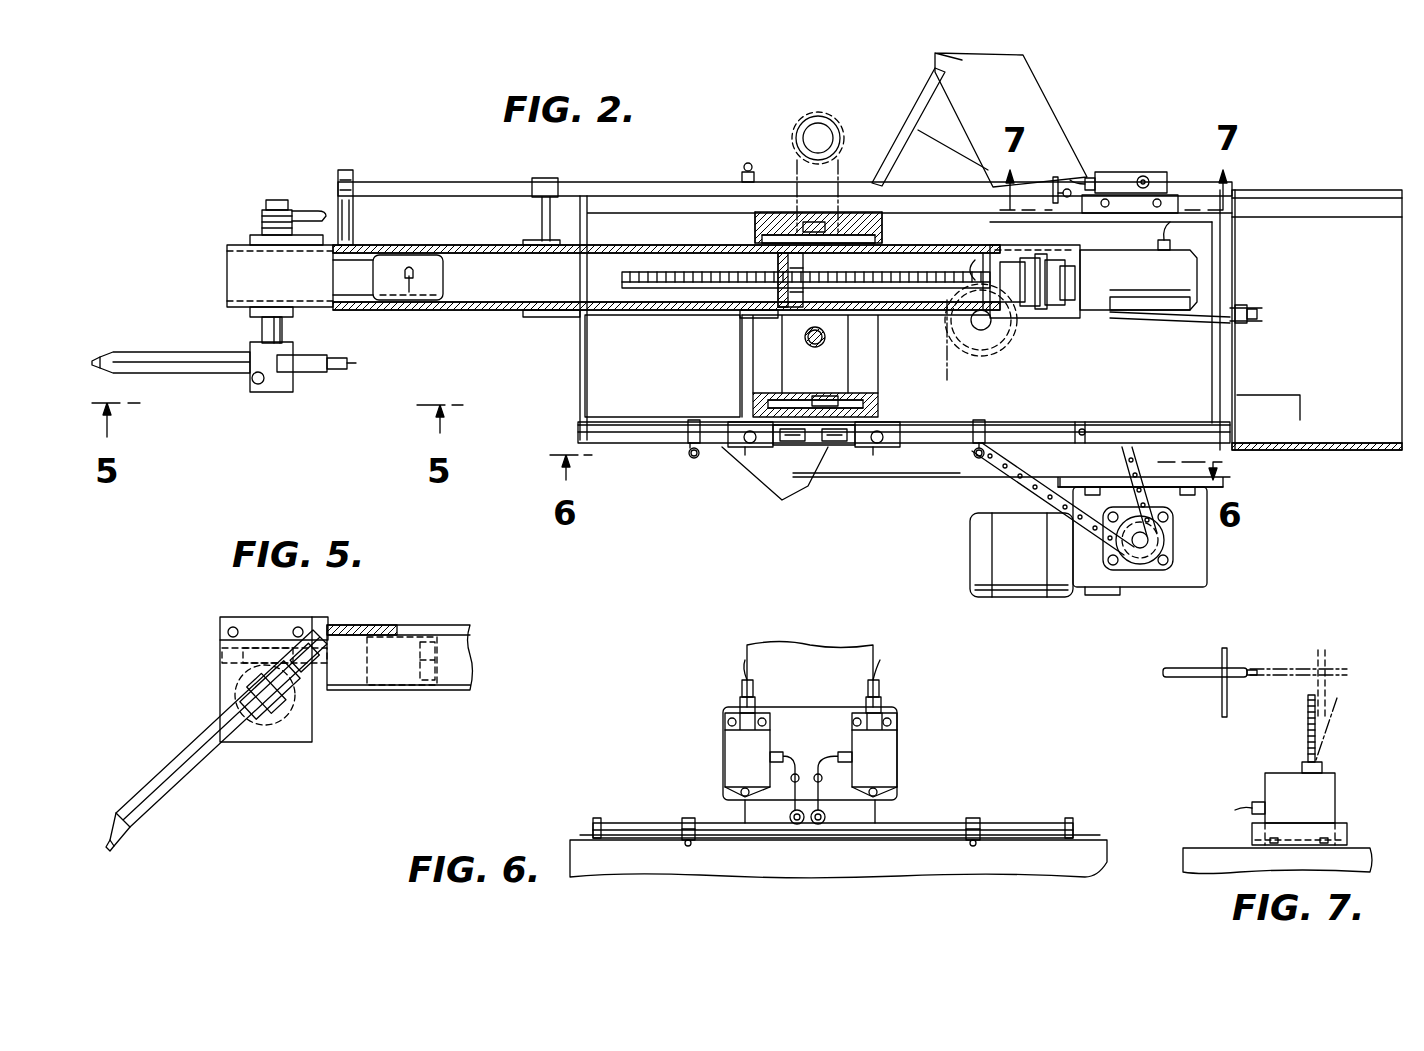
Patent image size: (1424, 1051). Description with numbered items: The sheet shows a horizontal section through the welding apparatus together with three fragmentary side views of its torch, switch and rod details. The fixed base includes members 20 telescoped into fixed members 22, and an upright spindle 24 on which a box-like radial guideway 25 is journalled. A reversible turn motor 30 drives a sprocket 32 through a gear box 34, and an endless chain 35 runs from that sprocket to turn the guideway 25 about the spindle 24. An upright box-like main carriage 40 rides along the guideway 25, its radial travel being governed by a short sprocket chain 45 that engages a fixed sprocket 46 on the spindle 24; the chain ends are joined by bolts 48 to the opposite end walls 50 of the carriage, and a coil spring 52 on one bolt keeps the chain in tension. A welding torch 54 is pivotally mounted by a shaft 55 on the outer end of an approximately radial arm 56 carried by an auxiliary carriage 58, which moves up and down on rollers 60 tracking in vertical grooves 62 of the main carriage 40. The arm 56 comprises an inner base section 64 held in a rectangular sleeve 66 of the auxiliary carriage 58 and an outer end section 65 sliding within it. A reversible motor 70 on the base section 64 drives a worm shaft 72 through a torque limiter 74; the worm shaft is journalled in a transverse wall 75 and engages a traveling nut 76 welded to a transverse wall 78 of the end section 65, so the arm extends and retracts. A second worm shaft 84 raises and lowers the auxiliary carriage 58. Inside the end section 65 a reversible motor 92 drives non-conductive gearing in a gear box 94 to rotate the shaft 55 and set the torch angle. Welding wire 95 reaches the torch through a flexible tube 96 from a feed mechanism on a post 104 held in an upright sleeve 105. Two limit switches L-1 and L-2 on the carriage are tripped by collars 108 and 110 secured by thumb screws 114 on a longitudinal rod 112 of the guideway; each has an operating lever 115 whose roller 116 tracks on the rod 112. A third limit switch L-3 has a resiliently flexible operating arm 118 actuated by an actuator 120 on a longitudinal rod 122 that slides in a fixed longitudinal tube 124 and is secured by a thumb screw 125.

In FIG. 2, the member 20 is at (781, 498).
In FIG. 2, the fixed member 22 is at (1032, 94).
In FIG. 2, the upright spindle 24 is at (986, 328).
In FIG. 2, the radial guideway 25 is at (583, 392).
In FIG. 6, the radial guideway 25 is at (640, 863).
In FIG. 7, the radial guideway 25 is at (1230, 875).
In FIG. 2, the reversible motor 30 is at (1040, 598).
In FIG. 2, the sprocket 32 is at (1152, 531).
In FIG. 2, the gear box 34 is at (1160, 588).
In FIG. 2, the endless chain 35 is at (1040, 484).
In FIG. 2, the main carriage 40 is at (878, 403).
In FIG. 6, the main carriage 40 is at (808, 656).
In FIG. 2, the sprocket chain 45 is at (949, 302).
In FIG. 2, the fixed sprocket 46 is at (998, 324).
In FIG. 2, the bolts 48 is at (738, 320).
In FIG. 2, the end walls 50 is at (1236, 380).
In FIG. 2, the coil spring 52 is at (1240, 312).
In FIG. 2, the welding torch 54 is at (195, 374).
In FIG. 5, the welding torch 54 is at (205, 764).
In FIG. 2, the shaft 55 is at (270, 330).
In FIG. 2, the arm 56 is at (452, 311).
In FIG. 5, the arm 56 is at (462, 629).
In FIG. 2, the auxiliary carriage 58 is at (852, 355).
In FIG. 2, the rollers 60 is at (808, 228).
In FIG. 2, the vertical grooves 62 is at (825, 231).
In FIG. 2, the inner base section 64 is at (626, 318).
In FIG. 2, the outer end section 65 is at (493, 230).
In FIG. 5, the outer end section 65 is at (460, 690).
In FIG. 2, the sleeve 66 is at (882, 240).
In FIG. 2, the reversible motor 70 is at (1140, 300).
In FIG. 2, the worm shaft 72 is at (622, 278).
In FIG. 2, the torque limiter 74 is at (1053, 314).
In FIG. 2, the transverse wall 75 is at (983, 264).
In FIG. 2, the traveling nut 76 is at (778, 266).
In FIG. 2, the transverse wall 78 is at (748, 313).
In FIG. 2, the worm shaft 84 is at (826, 338).
In FIG. 2, the reversible motor 92 is at (405, 298).
In FIG. 5, the reversible motor 92 is at (402, 689).
In FIG. 2, the gear box 94 is at (249, 277).
In FIG. 5, the gear box 94 is at (300, 731).
In FIG. 2, the welding wire 95 is at (122, 358).
In FIG. 5, the welding wire 95 is at (113, 848).
In FIG. 2, the flexible tube 96 is at (331, 369).
In FIG. 5, the flexible tube 96 is at (322, 641).
In FIG. 2, the post 104 is at (826, 126).
In FIG. 2, the upright sleeve 105 is at (808, 120).
In FIG. 2, the collar 108 is at (693, 420).
In FIG. 6, the collar 108 is at (688, 817).
In FIG. 2, the collar 110 is at (978, 420).
In FIG. 6, the collar 110 is at (976, 822).
In FIG. 2, the longitudinal rod 112 is at (652, 441).
In FIG. 6, the longitudinal rod 112 is at (920, 825).
In FIG. 2, the thumb screws 114 is at (692, 459).
In FIG. 6, the thumb screws 114 is at (688, 846).
In FIG. 6, the operating lever 115 is at (814, 770).
In FIG. 6, the roller 116 is at (818, 826).
In FIG. 2, the operating arm 118 is at (1149, 180).
In FIG. 7, the operating arm 118 is at (1308, 729).
In FIG. 2, the actuator 120 is at (1055, 177).
In FIG. 7, the actuator 120 is at (1222, 712).
In FIG. 2, the longitudinal rod 122 is at (955, 172).
In FIG. 7, the longitudinal rod 122 is at (1281, 666).
In FIG. 2, the fixed longitudinal tube 124 is at (410, 183).
In FIG. 2, the thumb screw 125 is at (745, 170).
In FIG. 2, the limit switch L-1 is at (765, 448).
In FIG. 6, the limit switch L-1 is at (735, 752).
In FIG. 2, the limit switch L-2 is at (896, 448).
In FIG. 6, the limit switch L-2 is at (888, 764).
In FIG. 2, the limit switch L-3 is at (1125, 173).
In FIG. 7, the limit switch L-3 is at (1320, 786).